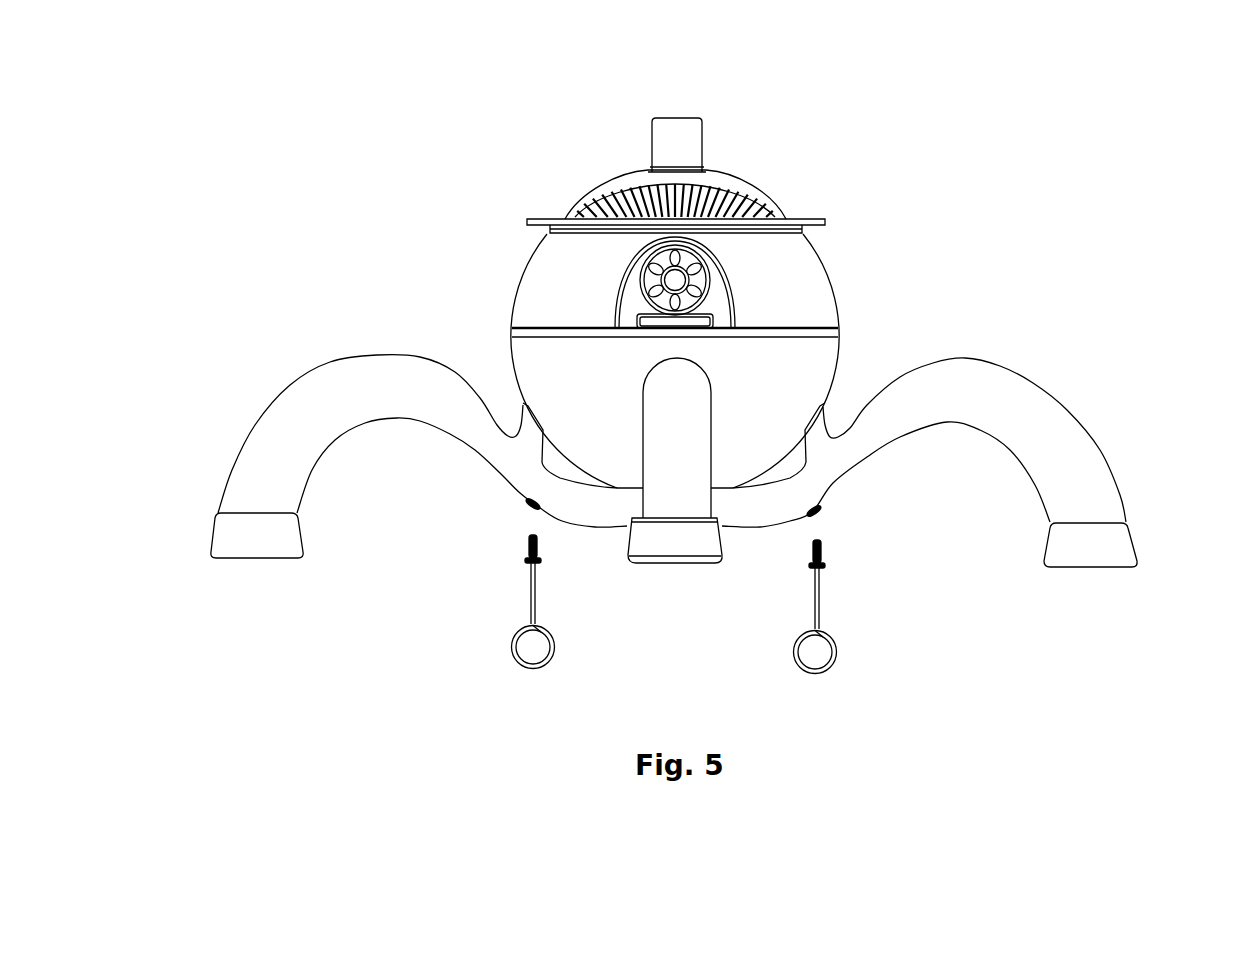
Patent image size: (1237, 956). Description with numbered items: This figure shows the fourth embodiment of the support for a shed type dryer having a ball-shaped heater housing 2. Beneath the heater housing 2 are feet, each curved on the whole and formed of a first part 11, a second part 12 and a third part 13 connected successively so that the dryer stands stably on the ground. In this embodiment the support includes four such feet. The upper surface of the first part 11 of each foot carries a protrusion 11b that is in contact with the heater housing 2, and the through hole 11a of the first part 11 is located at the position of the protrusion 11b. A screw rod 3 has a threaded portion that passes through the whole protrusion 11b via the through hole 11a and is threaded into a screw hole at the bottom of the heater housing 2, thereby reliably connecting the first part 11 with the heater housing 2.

The heater housing 2 is at (812, 303).
The screw rod 3 is at (838, 655).
The first part 11 is at (837, 487).
The through hole 11a is at (812, 514).
The protrusion 11b is at (522, 410).
The second part 12 is at (1017, 393).
The third part 13 is at (1125, 540).